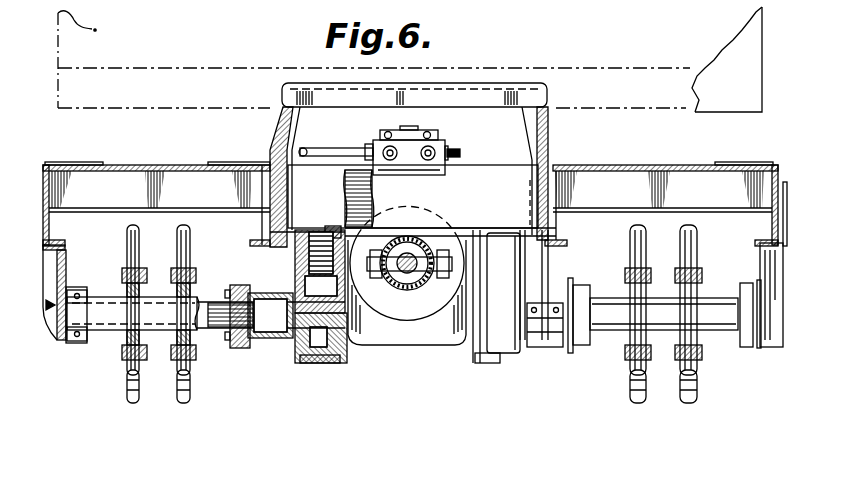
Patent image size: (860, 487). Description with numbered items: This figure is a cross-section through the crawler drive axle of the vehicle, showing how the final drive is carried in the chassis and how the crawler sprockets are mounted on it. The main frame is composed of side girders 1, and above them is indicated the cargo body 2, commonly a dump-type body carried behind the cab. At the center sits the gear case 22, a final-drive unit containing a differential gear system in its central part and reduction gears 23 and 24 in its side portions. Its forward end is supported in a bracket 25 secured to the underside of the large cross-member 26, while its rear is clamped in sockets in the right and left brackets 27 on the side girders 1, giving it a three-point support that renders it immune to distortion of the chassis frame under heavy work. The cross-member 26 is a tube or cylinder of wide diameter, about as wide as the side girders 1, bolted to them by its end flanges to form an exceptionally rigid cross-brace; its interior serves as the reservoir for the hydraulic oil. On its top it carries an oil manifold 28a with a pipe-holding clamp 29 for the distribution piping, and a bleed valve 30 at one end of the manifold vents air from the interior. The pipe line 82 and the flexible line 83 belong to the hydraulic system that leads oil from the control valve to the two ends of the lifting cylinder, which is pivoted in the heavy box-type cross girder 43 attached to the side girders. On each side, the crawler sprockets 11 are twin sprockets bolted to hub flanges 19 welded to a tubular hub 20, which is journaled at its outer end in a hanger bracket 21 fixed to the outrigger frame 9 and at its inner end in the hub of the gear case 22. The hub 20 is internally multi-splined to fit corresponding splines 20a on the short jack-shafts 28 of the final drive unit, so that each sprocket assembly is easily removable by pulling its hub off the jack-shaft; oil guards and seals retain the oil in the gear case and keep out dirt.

The side girders 1 is at (258, 173).
The cargo body 2 is at (750, 54).
The outrigger frame 9 is at (42, 176).
The crawler sprockets 11 is at (183, 393).
The hub flanges 19 is at (178, 272).
The tubular hub 20 is at (110, 325).
The splines 20a is at (218, 337).
The hanger bracket 21 is at (55, 340).
The gear case 22 is at (305, 353).
The reduction gear 23 is at (318, 236).
The reduction gear 24 is at (313, 355).
The bracket 25 is at (428, 297).
The cross-member 26 is at (480, 180).
The brackets 27 is at (253, 347).
The jack-shafts 28 is at (277, 343).
The oil manifold 28a is at (433, 147).
The pipe-holding clamp 29 is at (417, 132).
The bleed valve 30 is at (455, 147).
The cross girder 43 is at (521, 92).
The pipe line 82 is at (385, 135).
The flexible line 83 is at (427, 135).